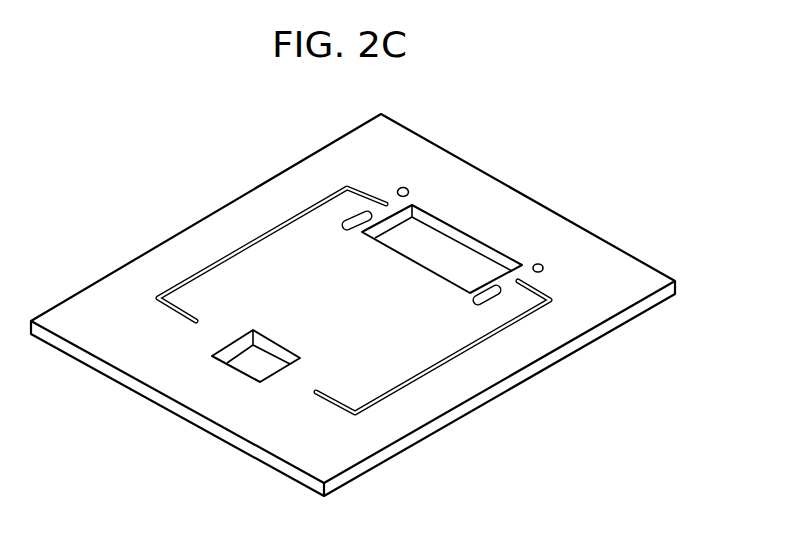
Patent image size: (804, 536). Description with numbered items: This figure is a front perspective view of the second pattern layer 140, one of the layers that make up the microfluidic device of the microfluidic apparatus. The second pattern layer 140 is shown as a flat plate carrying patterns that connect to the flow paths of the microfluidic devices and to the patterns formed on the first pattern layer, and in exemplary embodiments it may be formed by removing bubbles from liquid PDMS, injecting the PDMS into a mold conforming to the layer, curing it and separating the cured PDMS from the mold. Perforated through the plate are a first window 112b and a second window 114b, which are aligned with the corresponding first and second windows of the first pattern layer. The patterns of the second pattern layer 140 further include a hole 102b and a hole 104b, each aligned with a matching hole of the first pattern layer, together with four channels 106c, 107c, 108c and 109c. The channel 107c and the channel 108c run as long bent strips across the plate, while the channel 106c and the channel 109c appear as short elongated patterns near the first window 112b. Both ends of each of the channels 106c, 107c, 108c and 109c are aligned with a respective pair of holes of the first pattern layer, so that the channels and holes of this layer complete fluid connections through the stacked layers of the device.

The second pattern layer 140 is at (453, 413).
The first window 112b is at (447, 255).
The second window 114b is at (260, 363).
The channel 107c is at (267, 228).
The channel 108c is at (477, 342).
The channel 106c is at (360, 218).
The channel 109c is at (492, 298).
The hole 102b is at (400, 189).
The hole 104b is at (543, 272).